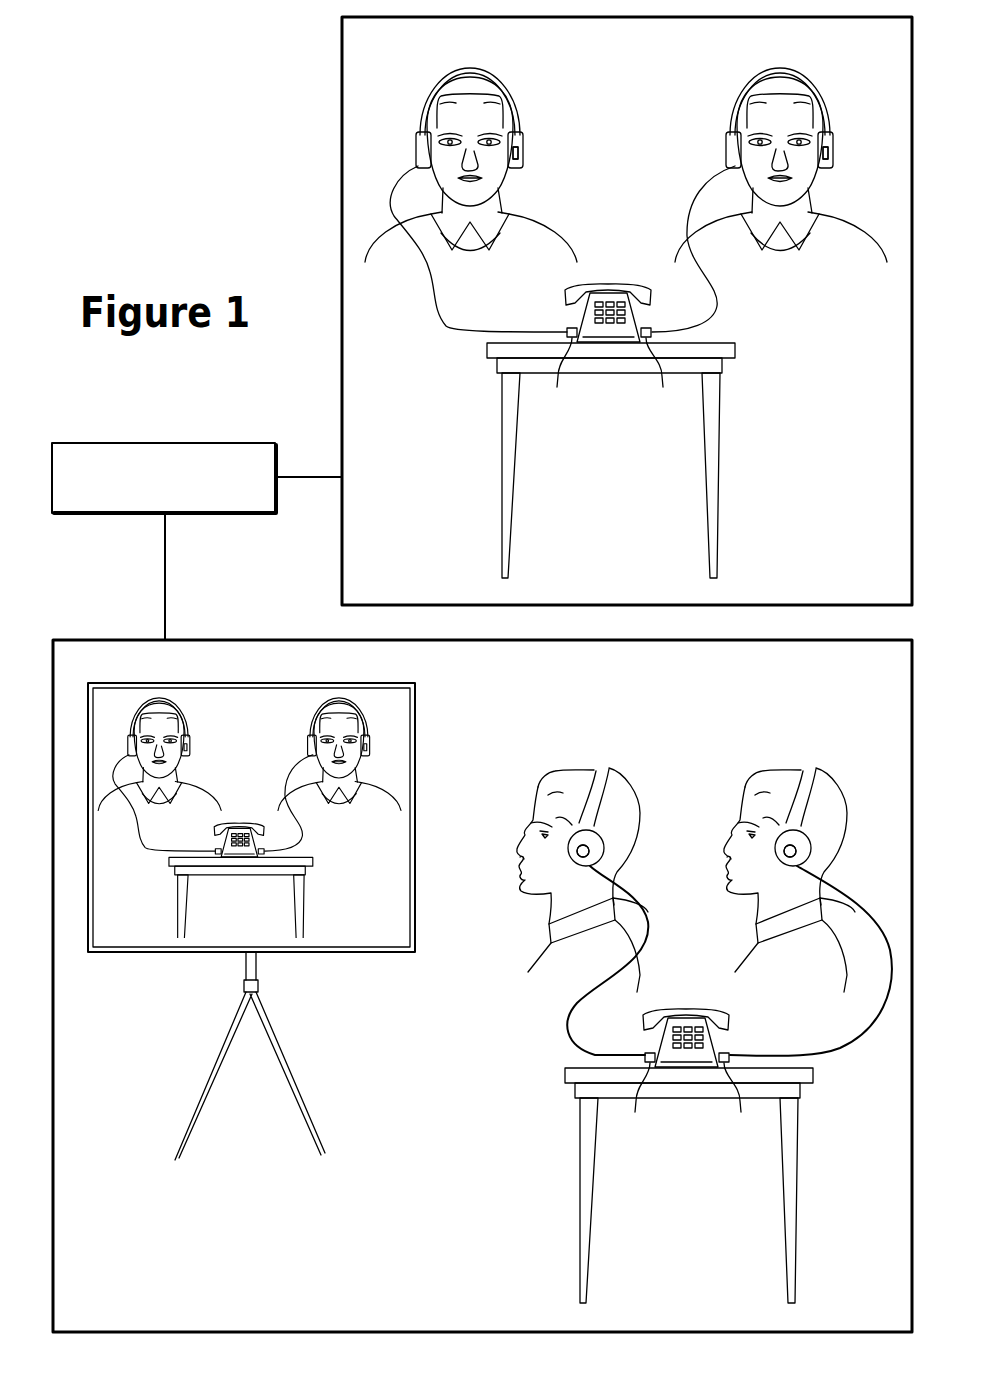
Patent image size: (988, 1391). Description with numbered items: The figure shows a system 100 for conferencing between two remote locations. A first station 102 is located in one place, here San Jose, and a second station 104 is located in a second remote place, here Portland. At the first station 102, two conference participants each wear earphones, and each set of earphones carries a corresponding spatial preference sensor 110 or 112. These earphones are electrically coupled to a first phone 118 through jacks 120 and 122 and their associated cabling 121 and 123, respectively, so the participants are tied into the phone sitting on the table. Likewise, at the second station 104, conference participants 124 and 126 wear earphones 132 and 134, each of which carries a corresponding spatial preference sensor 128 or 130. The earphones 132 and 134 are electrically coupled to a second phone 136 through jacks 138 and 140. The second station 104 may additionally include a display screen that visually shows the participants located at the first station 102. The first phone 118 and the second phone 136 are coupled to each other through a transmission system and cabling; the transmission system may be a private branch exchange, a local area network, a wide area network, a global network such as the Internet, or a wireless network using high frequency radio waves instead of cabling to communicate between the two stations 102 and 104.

The system 100 is at (122, 68).
The first station 102 is at (783, 47).
The second station 104 is at (783, 686).
The spatial preference sensor 110 is at (869, 146).
The spatial preference sensor 112 is at (524, 157).
The first phone 118 is at (608, 283).
The jack 120 is at (658, 377).
The cabling 121 is at (712, 318).
The jack 122 is at (557, 377).
The cabling 123 is at (441, 318).
The conference participant 124 is at (537, 943).
The conference participant 126 is at (745, 943).
The spatial preference sensor 128 is at (603, 850).
The spatial preference sensor 130 is at (810, 850).
The earphones 132 is at (601, 770).
The earphones 134 is at (809, 770).
The second phone 136 is at (688, 1008).
The jack 138 is at (633, 1103).
The jack 140 is at (737, 1103).